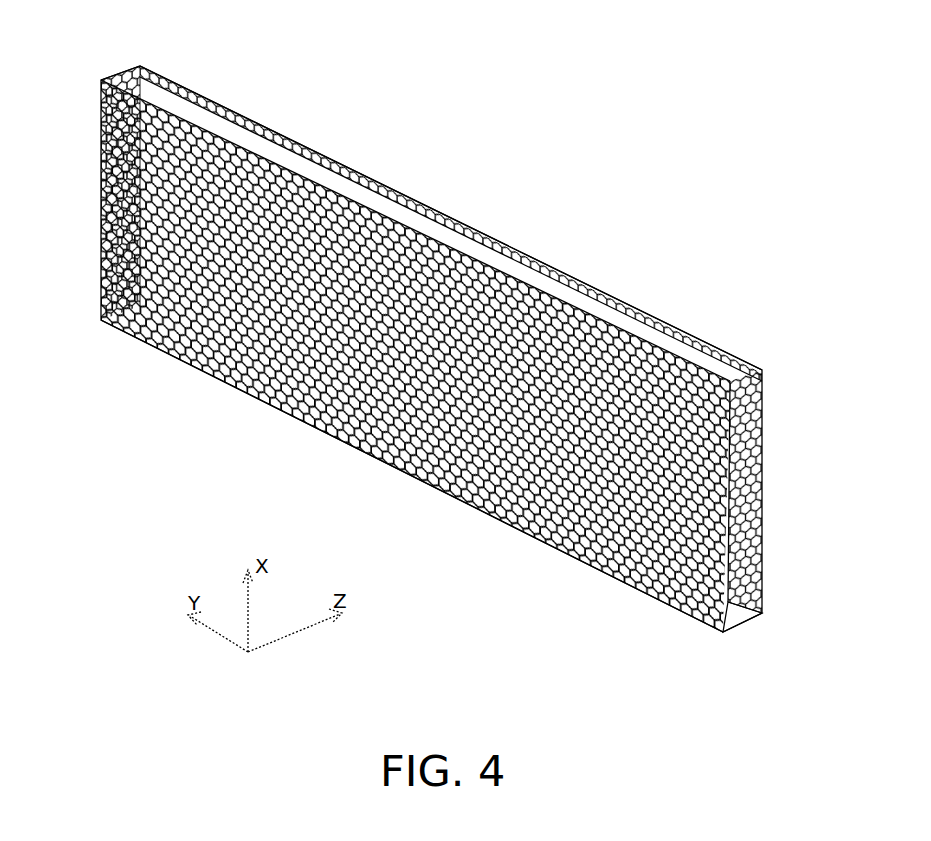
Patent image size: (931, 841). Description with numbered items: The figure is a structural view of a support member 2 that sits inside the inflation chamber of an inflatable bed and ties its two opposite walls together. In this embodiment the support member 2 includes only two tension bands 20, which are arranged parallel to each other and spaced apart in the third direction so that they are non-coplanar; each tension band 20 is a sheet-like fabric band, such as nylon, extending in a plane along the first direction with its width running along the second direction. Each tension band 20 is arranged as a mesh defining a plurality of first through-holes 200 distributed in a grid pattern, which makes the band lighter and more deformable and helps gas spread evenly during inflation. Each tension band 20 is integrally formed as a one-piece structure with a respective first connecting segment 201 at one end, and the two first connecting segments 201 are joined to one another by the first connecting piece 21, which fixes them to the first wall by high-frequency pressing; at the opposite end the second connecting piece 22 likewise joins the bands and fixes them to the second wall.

The support member 2 is at (560, 143).
The tension band 20 is at (107, 143).
The first through-holes 200 is at (102, 200).
The first connecting segment 201 is at (146, 48).
The first connecting piece 21 is at (190, 107).
The second connecting piece 22 is at (732, 615).